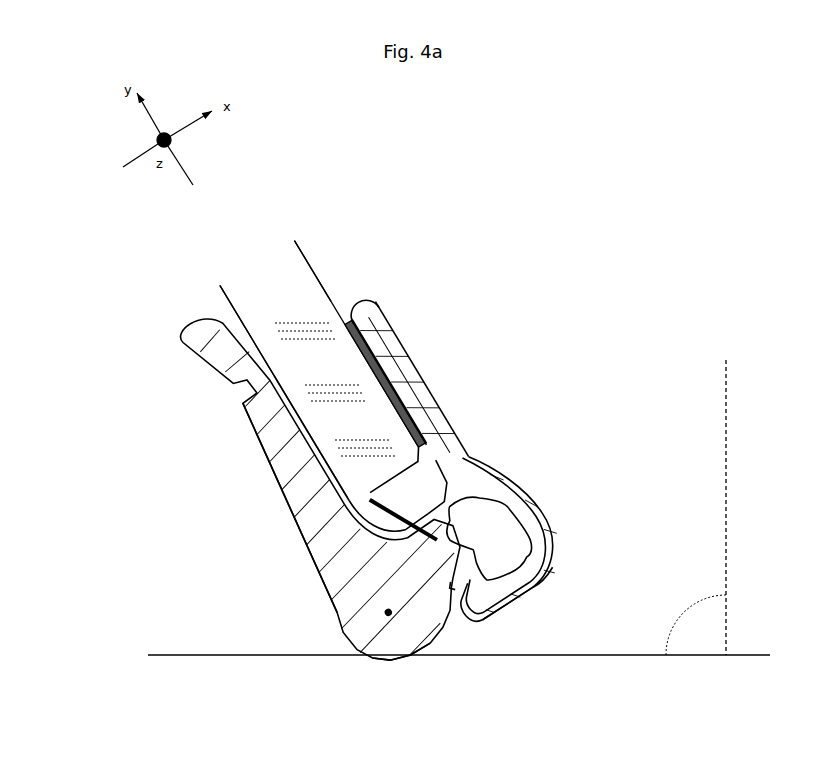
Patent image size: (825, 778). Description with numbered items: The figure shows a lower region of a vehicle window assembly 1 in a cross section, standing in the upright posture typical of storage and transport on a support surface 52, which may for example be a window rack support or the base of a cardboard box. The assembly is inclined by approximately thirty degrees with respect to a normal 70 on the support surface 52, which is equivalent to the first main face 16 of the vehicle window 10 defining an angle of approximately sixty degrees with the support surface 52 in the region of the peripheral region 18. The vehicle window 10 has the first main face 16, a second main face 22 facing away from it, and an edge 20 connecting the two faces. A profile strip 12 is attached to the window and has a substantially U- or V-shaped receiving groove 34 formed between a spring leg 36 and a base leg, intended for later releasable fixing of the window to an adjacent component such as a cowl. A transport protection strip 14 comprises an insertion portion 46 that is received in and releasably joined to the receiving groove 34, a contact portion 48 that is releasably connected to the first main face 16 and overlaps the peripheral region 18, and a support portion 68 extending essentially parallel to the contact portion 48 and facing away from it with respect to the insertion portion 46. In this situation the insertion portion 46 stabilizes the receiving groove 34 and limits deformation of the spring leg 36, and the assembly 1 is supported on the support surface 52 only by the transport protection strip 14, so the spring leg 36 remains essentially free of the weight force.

The vehicle window assembly 1 is at (453, 180).
The vehicle window 10 is at (333, 290).
The profile strip 12 is at (450, 461).
The transport protection strip 14 is at (286, 489).
The first main face 16 is at (237, 315).
The peripheral region 18 is at (278, 319).
The edge 20 is at (394, 469).
The second main face 22 is at (313, 270).
The receiving groove 34 is at (487, 535).
The spring leg 36 is at (517, 593).
The insertion portion 46 is at (451, 587).
The contact portion 48 is at (223, 572).
The support surface 52 is at (222, 658).
The support portion 68 is at (402, 651).
The normal 70 is at (726, 385).